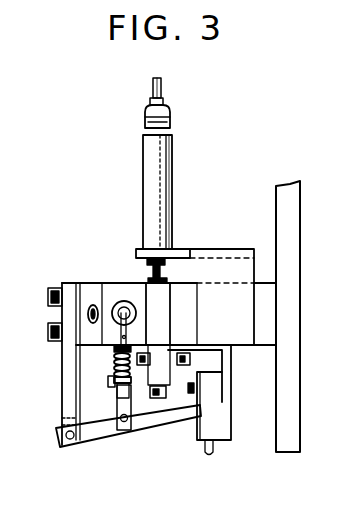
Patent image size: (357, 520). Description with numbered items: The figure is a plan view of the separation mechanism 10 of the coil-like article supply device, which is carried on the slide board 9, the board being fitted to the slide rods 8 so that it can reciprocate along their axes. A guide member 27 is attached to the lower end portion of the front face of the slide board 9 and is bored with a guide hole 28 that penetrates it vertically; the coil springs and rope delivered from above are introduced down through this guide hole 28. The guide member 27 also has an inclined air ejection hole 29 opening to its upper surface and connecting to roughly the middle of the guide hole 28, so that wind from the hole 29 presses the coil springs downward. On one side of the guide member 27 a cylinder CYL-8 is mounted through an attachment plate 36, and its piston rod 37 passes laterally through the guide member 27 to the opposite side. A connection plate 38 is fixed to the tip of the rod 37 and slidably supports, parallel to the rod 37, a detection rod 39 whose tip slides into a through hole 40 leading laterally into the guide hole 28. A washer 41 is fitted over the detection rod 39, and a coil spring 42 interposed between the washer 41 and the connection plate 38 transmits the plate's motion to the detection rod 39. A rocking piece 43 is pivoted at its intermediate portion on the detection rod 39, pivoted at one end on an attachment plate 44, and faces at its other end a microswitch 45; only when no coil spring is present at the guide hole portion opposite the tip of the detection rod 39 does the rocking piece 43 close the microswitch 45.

The slide rods 8 is at (262, 141).
The slide board 9 is at (289, 238).
The separation mechanism 10 is at (142, 197).
The guide member 27 is at (120, 302).
The guide hole 28 is at (94, 305).
The air ejection hole 29 is at (85, 304).
The attachment plate 36 is at (205, 266).
The piston rod 37 is at (164, 272).
The connection plate 38 is at (160, 410).
The detection rod 39 is at (116, 380).
The through hole 40 is at (124, 337).
The washer 41 is at (116, 353).
The coil spring 42 is at (150, 413).
The rocking piece 43 is at (96, 432).
The attachment plate 44 is at (64, 399).
The microswitch 45 is at (231, 412).